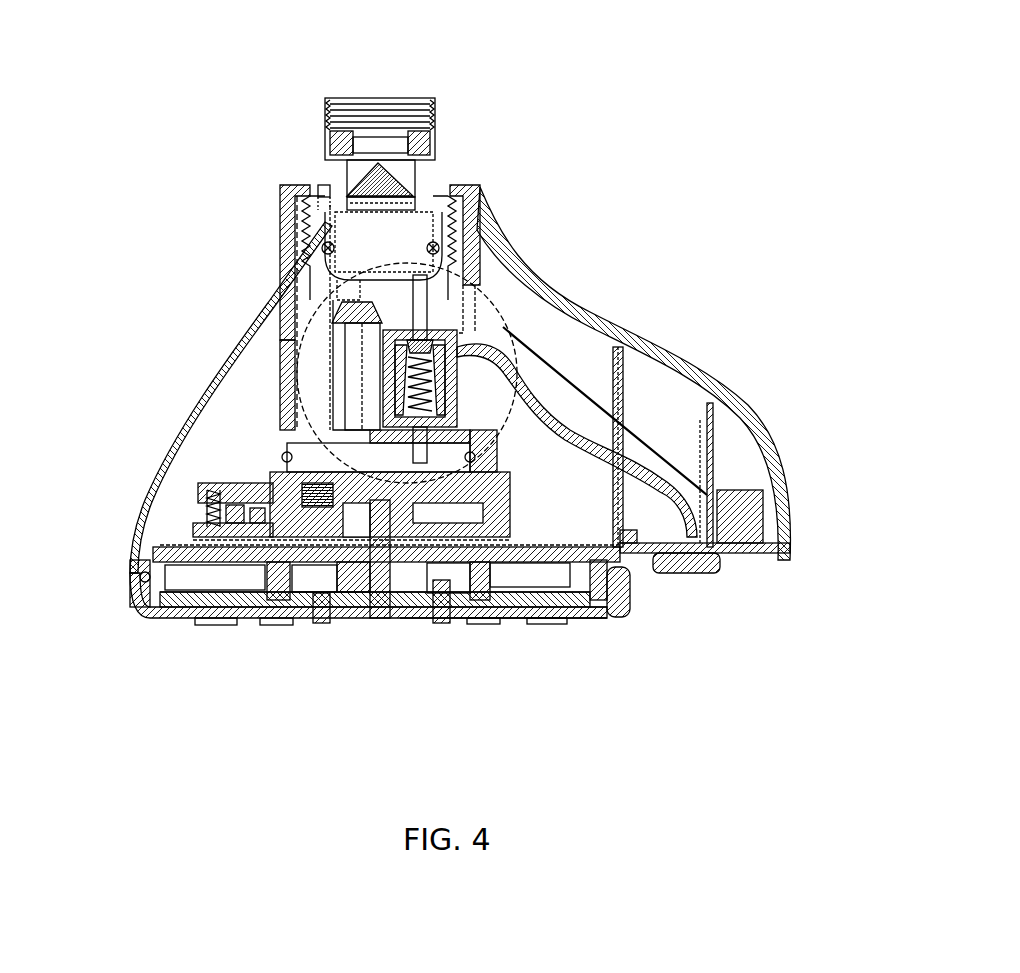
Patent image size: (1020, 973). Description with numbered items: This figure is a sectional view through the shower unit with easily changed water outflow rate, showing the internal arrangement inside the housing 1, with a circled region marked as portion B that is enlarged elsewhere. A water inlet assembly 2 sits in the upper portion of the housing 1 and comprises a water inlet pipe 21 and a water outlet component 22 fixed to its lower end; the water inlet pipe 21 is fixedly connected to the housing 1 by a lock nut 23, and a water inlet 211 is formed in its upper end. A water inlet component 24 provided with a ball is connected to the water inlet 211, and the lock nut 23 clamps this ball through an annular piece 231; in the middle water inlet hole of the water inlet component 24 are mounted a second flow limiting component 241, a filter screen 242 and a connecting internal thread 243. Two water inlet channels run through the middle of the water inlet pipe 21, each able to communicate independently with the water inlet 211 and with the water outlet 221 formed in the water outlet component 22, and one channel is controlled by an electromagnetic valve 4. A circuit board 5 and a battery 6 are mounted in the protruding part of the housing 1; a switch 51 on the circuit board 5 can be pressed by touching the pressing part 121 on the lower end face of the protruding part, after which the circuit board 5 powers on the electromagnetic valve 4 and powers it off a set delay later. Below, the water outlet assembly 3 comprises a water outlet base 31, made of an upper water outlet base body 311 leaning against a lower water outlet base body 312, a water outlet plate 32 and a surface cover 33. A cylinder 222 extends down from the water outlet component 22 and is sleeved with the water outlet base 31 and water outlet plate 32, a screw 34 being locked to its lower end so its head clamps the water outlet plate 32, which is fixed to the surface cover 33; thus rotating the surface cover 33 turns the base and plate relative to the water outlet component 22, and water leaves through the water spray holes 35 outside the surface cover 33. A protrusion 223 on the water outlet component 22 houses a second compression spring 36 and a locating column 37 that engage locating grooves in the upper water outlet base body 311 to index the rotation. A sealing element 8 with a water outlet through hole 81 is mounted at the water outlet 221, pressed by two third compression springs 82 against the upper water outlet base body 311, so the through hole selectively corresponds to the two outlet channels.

The housing 1 is at (518, 268).
The portion B is at (490, 317).
The water inlet assembly 2 is at (293, 353).
The water inlet pipe 21 is at (317, 387).
The water inlet 211 is at (300, 262).
The water outlet component 22 is at (275, 480).
The water outlet 221 is at (250, 483).
The cylinder 222 is at (413, 620).
The protrusion 223 is at (200, 500).
The lock nut 23 is at (298, 197).
The annular piece 231 is at (322, 190).
The water inlet component 24 is at (432, 105).
The second flow limiting component 241 is at (422, 205).
The filter screen 242 is at (403, 170).
The connecting internal thread 243 is at (372, 96).
The water outlet assembly 3 is at (183, 623).
The water outlet base 31 is at (665, 707).
The upper water outlet base body 311 is at (603, 613).
The lower water outlet base body 312 is at (550, 620).
The water outlet plate 32 is at (280, 602).
The surface cover 33 is at (247, 620).
The screw 34 is at (377, 617).
The water spray hole 35 is at (445, 627).
The second compression spring 36 is at (207, 515).
The locating column 37 is at (200, 528).
The electromagnetic valve 4 is at (548, 400).
The circuit board 5 is at (735, 556).
The switch 51 is at (700, 580).
The battery 6 is at (740, 490).
The sealing element 8 is at (130, 567).
The water outlet through hole 81 is at (140, 593).
The third compression spring 82 is at (318, 490).
The pressing part 121 is at (672, 575).